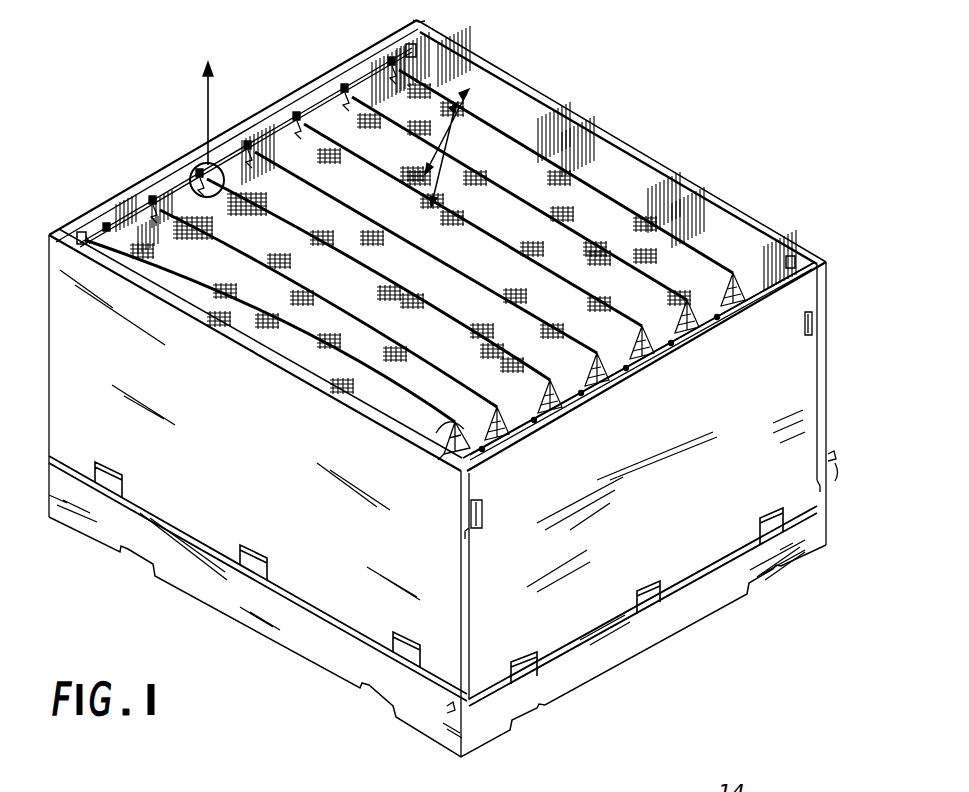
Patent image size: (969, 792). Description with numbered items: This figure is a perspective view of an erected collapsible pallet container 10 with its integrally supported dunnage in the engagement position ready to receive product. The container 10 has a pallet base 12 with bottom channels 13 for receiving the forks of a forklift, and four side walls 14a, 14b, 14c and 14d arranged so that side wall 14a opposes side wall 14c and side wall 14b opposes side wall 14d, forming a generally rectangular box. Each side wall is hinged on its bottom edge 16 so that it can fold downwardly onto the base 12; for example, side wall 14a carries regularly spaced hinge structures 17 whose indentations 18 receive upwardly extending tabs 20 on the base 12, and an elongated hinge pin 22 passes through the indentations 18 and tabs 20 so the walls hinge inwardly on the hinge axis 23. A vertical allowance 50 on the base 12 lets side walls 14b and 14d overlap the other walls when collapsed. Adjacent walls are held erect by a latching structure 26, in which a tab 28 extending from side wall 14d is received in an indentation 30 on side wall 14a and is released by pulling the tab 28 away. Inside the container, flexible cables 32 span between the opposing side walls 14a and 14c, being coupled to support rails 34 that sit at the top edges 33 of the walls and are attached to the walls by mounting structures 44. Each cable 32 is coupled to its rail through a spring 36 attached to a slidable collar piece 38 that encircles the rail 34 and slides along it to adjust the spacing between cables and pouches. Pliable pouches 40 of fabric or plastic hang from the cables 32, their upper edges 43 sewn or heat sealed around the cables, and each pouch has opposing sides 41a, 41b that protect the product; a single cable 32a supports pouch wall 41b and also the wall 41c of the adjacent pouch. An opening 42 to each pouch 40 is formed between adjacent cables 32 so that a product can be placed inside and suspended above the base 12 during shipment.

The container 10 is at (732, 124).
The pallet base 12 is at (458, 594).
The bottom channels 13 is at (140, 568).
The side wall 14a is at (683, 507).
The side wall 14b is at (623, 137).
The side wall 14c is at (245, 120).
The side wall 14d is at (275, 475).
The bottom edge 16 is at (180, 527).
The hinge structures 17 is at (167, 440).
The indentations 18 is at (260, 550).
The tabs 20 is at (260, 572).
The hinge pin 22 is at (87, 467).
The hinge axis 23 is at (280, 573).
The latching structure 26 is at (805, 339).
The tab 28 is at (477, 523).
The indentation 30 is at (807, 330).
The flexible cables 32 is at (409, 262).
The cable 32a is at (405, 424).
The top edges 33 is at (98, 210).
The support rails 34 is at (177, 185).
The spring 36 is at (351, 98).
The slidable collar piece 38 is at (294, 114).
The pliable pouches 40 is at (461, 147).
The pouch side 41a is at (464, 437).
The pouch side 41b is at (483, 458).
The pouch wall 41c is at (443, 450).
The opening 42 is at (312, 337).
The upper edges 43 is at (306, 283).
The mounting structures 44 is at (416, 44).
The vertical allowance 50 is at (450, 710).